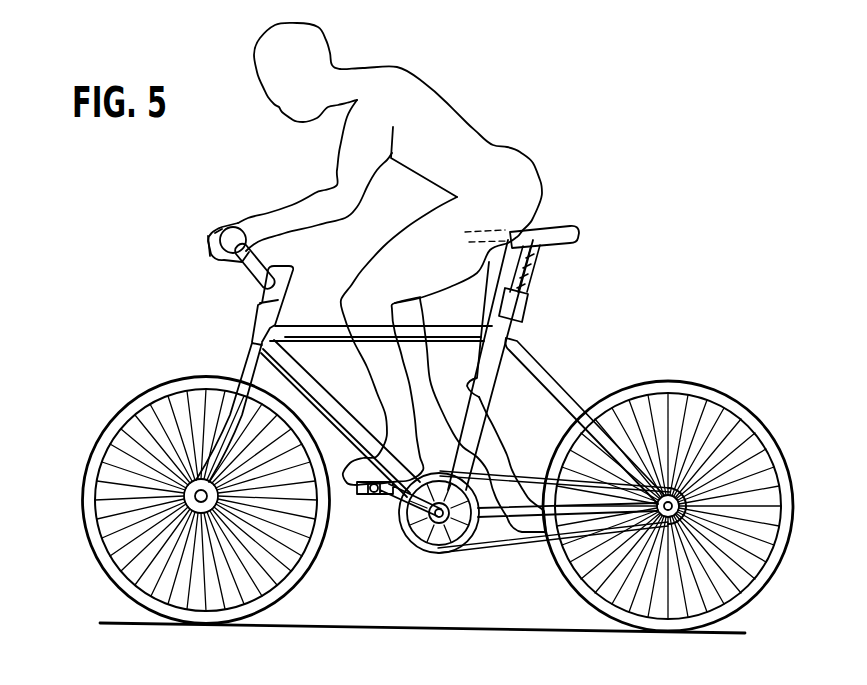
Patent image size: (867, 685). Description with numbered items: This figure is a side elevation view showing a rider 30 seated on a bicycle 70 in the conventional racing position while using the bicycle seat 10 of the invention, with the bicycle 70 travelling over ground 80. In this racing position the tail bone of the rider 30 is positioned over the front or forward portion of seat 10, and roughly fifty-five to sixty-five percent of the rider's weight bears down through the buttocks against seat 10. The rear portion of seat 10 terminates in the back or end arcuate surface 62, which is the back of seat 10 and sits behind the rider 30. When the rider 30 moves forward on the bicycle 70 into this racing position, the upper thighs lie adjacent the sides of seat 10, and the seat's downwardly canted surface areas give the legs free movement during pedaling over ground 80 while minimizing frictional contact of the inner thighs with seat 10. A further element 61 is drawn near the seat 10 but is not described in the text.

The bicycle seat 10 is at (560, 243).
The rider 30 is at (472, 112).
The seat base 61 is at (565, 243).
The back or end arcuate surface 62 is at (575, 226).
The bicycle 70 is at (73, 505).
The ground 80 is at (113, 620).